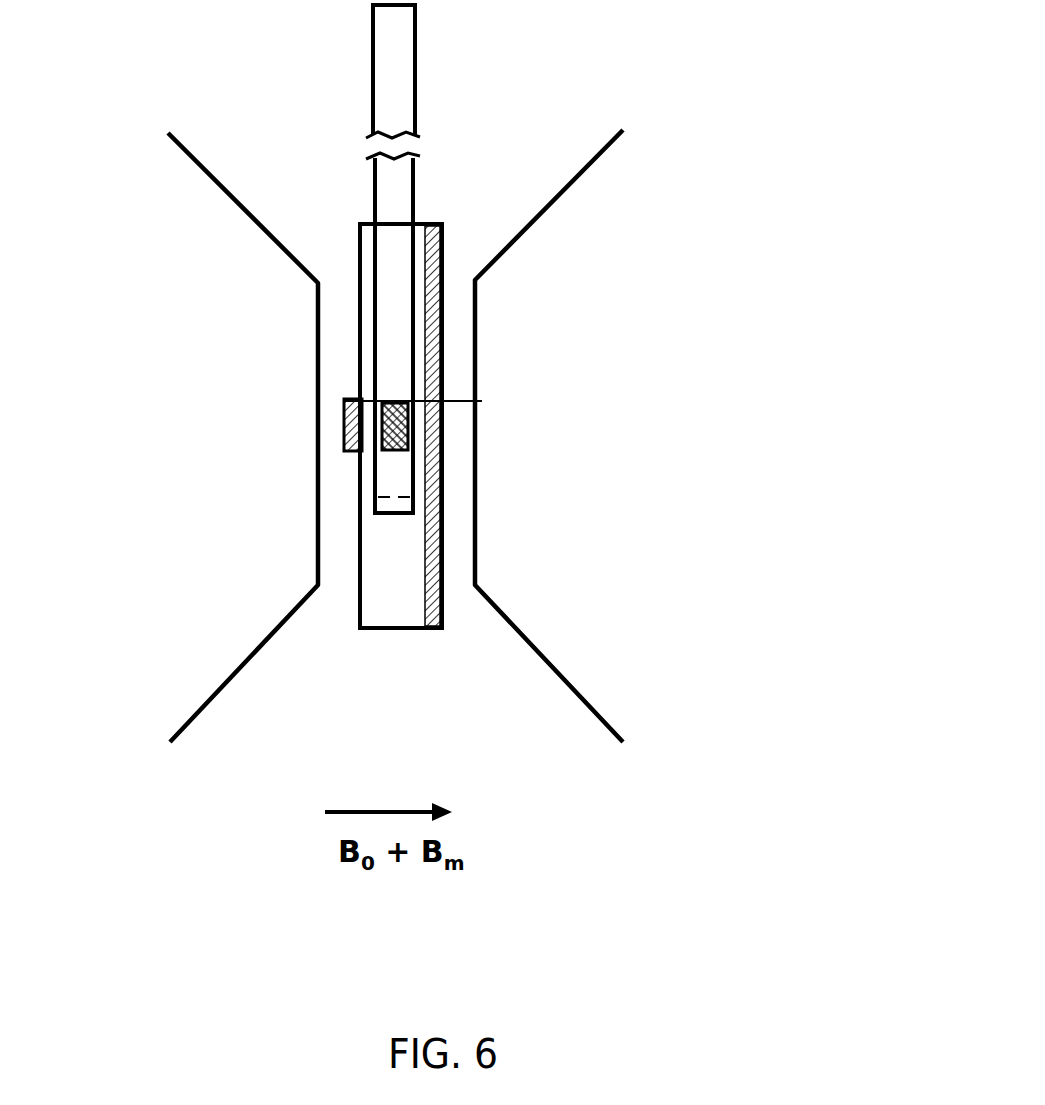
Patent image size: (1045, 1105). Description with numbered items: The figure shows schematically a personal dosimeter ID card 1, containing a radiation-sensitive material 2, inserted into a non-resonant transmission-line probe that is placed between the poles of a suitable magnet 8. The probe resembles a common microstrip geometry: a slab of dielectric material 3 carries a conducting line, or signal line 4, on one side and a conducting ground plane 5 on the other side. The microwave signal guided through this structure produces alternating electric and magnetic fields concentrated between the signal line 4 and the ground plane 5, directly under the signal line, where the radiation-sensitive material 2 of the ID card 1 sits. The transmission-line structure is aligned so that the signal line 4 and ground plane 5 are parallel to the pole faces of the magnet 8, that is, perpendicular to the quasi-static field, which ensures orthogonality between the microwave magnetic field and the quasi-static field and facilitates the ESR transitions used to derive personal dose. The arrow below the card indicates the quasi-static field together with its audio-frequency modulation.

The ID card 1 is at (509, 259).
The radiation-sensitive material 2 is at (663, 425).
The dielectric material 3 is at (407, 501).
The conducting line (signal line) 4 is at (257, 443).
The conducting ground plane 5 is at (665, 426).
The magnet 8 is at (403, 436).